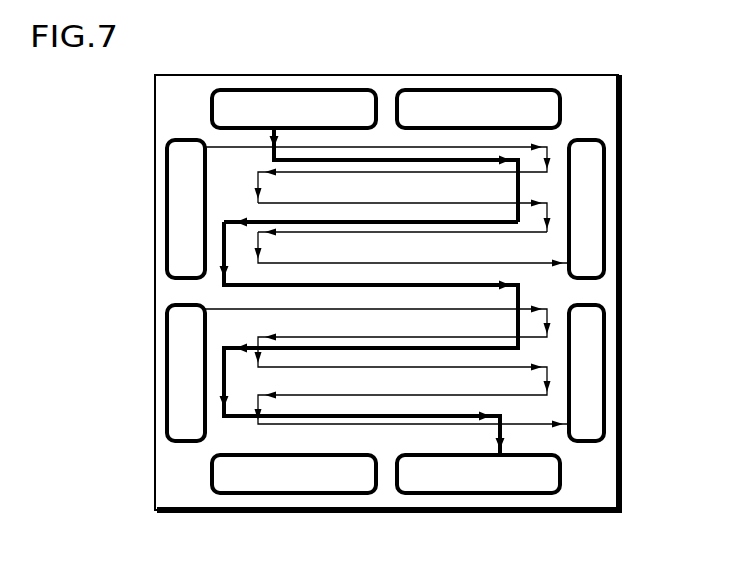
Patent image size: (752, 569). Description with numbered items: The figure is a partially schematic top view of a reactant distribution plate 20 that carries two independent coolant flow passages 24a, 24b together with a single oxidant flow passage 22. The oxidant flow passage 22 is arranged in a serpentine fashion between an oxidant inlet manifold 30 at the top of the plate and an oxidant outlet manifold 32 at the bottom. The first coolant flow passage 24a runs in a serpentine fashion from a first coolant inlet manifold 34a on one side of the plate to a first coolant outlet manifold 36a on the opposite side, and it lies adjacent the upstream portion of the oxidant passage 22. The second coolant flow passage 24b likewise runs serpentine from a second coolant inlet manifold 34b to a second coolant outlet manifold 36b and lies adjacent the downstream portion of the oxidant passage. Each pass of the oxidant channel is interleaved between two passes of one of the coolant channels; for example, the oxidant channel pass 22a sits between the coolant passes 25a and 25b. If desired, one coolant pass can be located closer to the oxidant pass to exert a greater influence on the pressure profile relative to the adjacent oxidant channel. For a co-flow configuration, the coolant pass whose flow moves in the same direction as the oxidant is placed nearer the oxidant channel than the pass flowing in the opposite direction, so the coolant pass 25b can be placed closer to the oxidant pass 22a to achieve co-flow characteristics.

The plate 20 is at (126, 134).
The oxidant flow passage 22 is at (387, 158).
The oxidant channel pass 22a is at (472, 220).
The first coolant flow passage 24a is at (413, 146).
The second coolant flow passage 24b is at (386, 423).
The coolant pass 25a is at (447, 202).
The coolant pass 25b is at (527, 232).
The oxidant inlet manifold 30 is at (292, 98).
The oxidant outlet manifold 32 is at (480, 483).
The first coolant inlet manifold 34a is at (178, 222).
The second coolant inlet manifold 34b is at (180, 410).
The first coolant outlet manifold 36a is at (591, 222).
The second coolant outlet manifold 36b is at (590, 408).